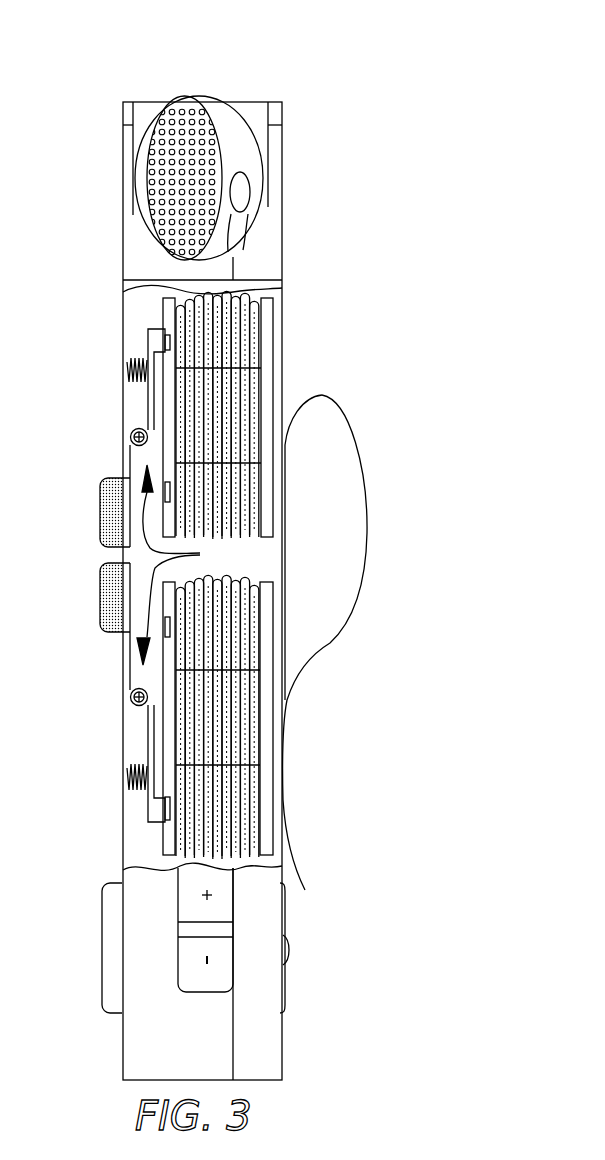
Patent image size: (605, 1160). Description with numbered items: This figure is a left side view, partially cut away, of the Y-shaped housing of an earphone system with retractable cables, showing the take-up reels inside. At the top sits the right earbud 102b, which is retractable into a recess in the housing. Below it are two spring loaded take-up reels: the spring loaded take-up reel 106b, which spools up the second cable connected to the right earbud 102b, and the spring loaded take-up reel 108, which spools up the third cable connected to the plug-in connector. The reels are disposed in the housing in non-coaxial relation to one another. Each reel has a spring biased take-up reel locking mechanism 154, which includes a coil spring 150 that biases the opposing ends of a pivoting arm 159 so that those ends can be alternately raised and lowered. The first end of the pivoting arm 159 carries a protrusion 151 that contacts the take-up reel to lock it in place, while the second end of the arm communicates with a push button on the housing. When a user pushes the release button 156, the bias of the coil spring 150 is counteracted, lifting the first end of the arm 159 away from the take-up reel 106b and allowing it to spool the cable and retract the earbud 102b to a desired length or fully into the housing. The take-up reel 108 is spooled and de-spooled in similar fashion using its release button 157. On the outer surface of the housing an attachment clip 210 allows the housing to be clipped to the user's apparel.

The right earbud 102b is at (203, 97).
The spring loaded take-up reel 106b is at (268, 327).
The spring loaded take-up reel 108 is at (267, 802).
The coil spring 150 is at (137, 360).
The protrusion 151 is at (158, 329).
The take-up reel locking mechanism 154 is at (191, 565).
The release button 156 is at (100, 513).
The release button 157 is at (100, 598).
The pivoting arm 159 is at (132, 430).
The attachment clip 210 is at (367, 542).